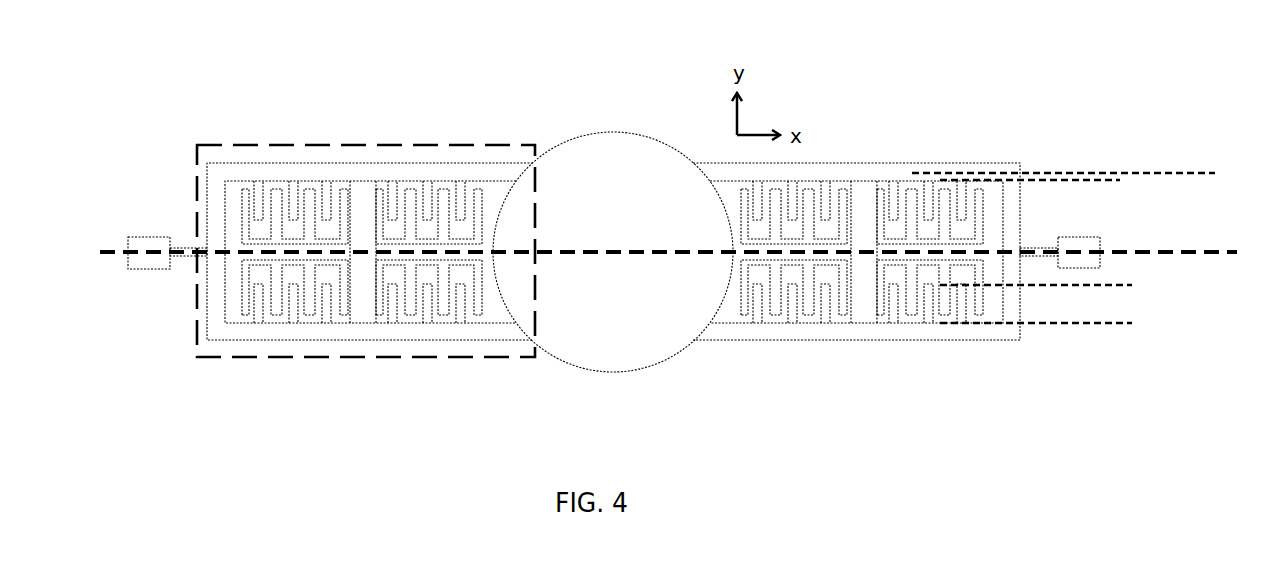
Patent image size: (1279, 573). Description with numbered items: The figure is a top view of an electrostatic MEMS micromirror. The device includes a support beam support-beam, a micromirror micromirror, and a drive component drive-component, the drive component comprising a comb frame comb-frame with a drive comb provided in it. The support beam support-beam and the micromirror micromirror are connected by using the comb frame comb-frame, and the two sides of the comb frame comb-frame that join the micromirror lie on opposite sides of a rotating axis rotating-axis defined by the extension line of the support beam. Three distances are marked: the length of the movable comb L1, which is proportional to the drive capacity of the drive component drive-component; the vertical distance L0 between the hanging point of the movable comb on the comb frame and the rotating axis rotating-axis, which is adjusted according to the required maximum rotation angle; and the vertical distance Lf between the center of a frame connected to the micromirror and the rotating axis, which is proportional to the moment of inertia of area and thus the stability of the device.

The rotating axis rotating-axis is at (113, 247).
The support beam support-beam is at (190, 247).
The drive component drive-component is at (273, 147).
The comb frame comb-frame is at (320, 333).
The element micromirror is at (668, 358).
The vertical distance between hanging point of movable comb and rotating axis L0 is at (1124, 180).
The length of movable comb L1 is at (1124, 285).
The vertical distance between center of comb frame and rotating axis Lf is at (1205, 173).